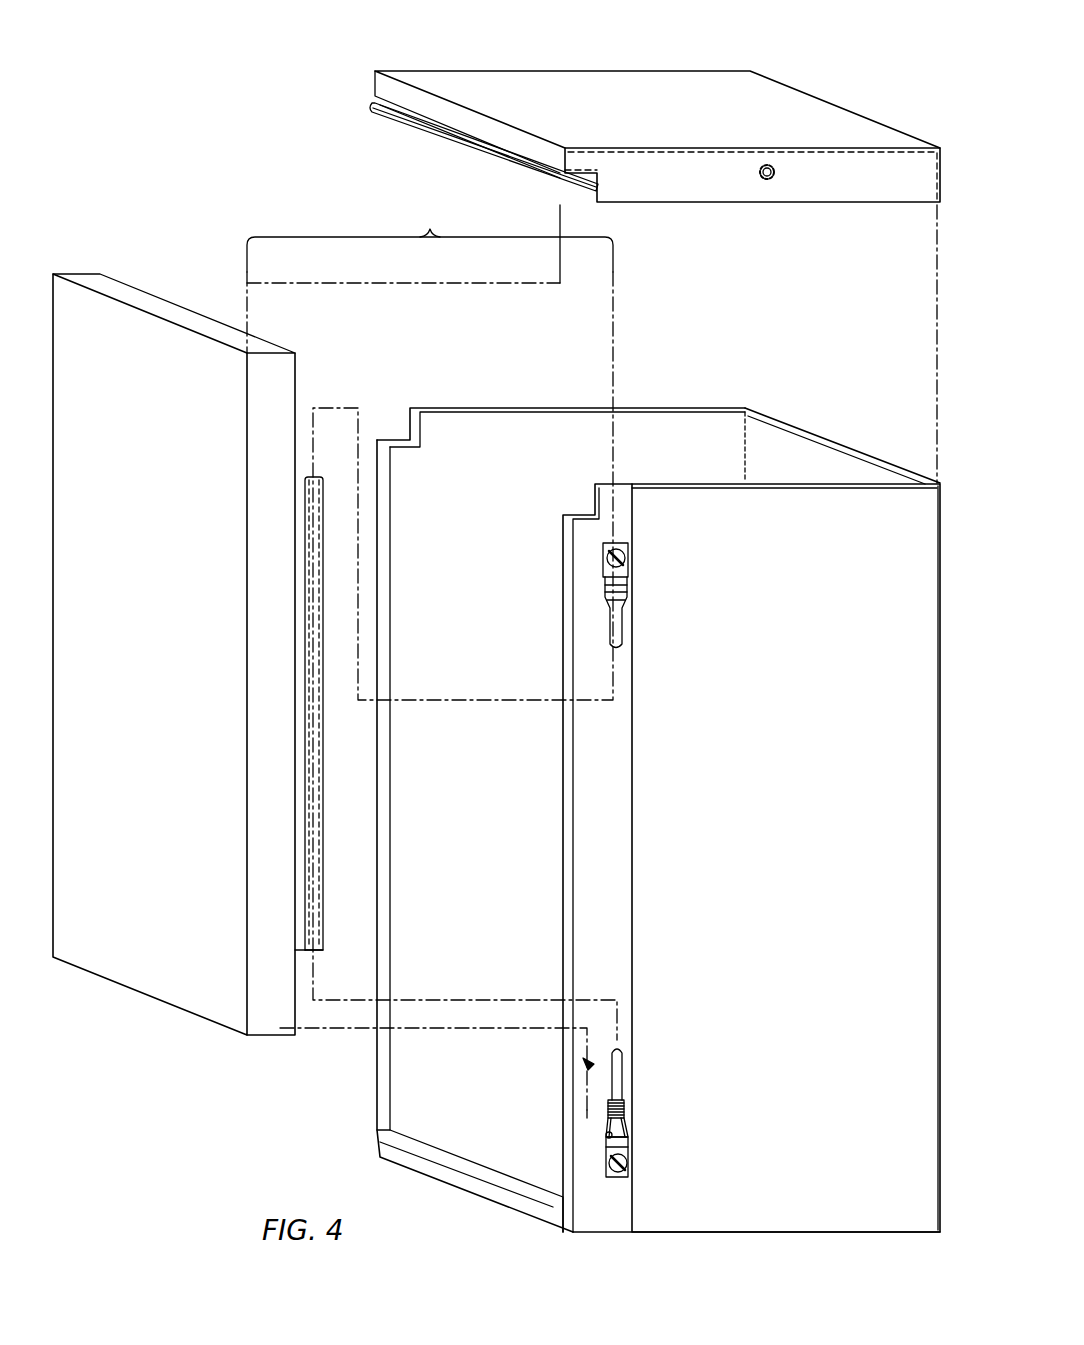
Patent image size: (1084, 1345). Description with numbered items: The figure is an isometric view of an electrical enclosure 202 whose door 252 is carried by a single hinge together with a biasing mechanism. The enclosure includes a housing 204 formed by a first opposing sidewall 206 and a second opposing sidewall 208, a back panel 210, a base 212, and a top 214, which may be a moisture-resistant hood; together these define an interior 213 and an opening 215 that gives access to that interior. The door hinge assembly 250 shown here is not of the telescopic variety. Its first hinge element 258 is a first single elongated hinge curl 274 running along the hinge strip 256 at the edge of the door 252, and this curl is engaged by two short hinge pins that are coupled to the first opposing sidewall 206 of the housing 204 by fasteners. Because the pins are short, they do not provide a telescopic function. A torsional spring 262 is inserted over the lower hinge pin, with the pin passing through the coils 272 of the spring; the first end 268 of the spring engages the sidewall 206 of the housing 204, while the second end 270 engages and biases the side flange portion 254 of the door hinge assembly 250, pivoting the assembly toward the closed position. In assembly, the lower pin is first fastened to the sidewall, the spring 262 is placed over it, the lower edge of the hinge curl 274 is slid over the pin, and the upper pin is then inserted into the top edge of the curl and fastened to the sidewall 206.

The electrical enclosure 202 is at (631, 835).
The housing 204 is at (850, 1212).
The first opposing sidewall 206 is at (840, 618).
The second opposing sidewall 208 is at (501, 507).
The back panel 210 is at (823, 442).
The base 212 is at (668, 1234).
The interior 213 is at (533, 812).
The top 214 is at (584, 92).
The opening 215 is at (388, 1114).
The door hinge assembly 250 is at (450, 221).
The door 252 is at (166, 707).
The side flange portion 254 is at (258, 585).
The hinge strip 256 is at (312, 484).
The first hinge element 258 is at (298, 562).
The torsional spring 262 is at (605, 1141).
The first end 268 is at (633, 1098).
The second end 270 is at (579, 1128).
The coils 272 is at (624, 1106).
The first single elongated hinge curl 274 is at (315, 953).